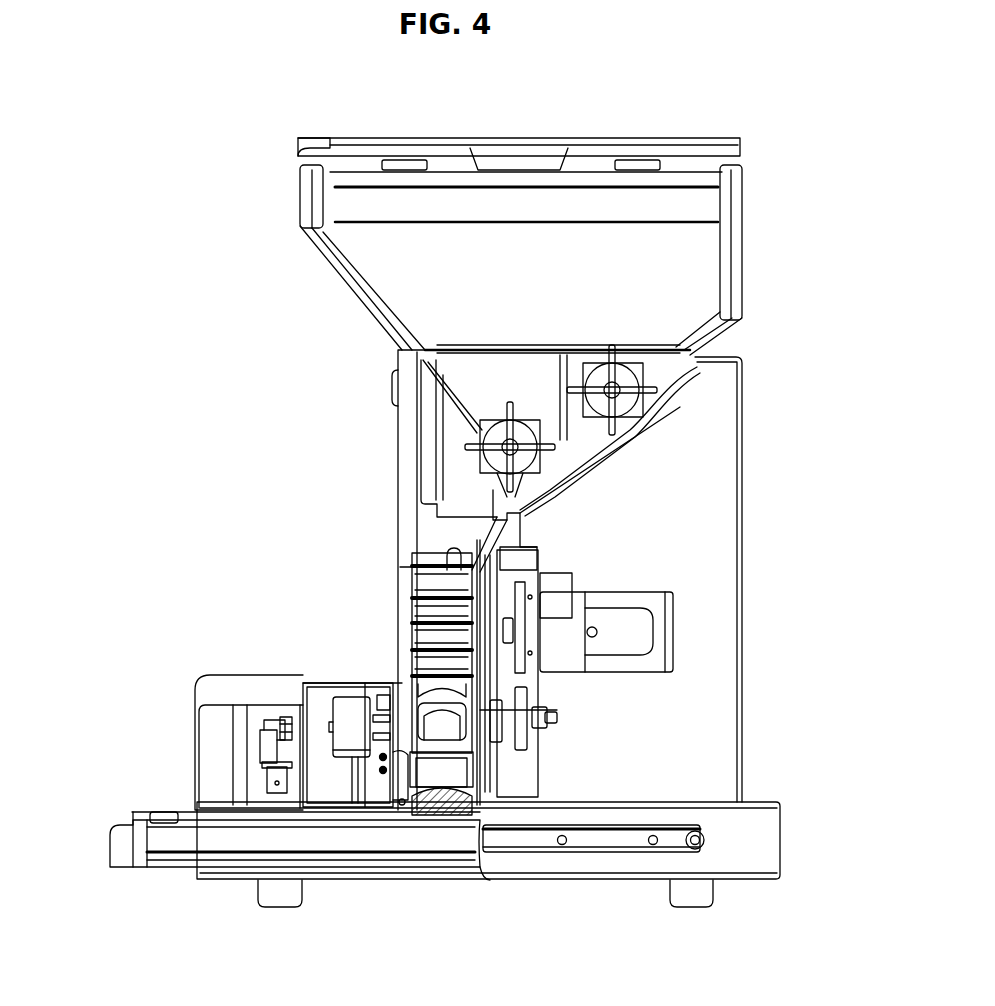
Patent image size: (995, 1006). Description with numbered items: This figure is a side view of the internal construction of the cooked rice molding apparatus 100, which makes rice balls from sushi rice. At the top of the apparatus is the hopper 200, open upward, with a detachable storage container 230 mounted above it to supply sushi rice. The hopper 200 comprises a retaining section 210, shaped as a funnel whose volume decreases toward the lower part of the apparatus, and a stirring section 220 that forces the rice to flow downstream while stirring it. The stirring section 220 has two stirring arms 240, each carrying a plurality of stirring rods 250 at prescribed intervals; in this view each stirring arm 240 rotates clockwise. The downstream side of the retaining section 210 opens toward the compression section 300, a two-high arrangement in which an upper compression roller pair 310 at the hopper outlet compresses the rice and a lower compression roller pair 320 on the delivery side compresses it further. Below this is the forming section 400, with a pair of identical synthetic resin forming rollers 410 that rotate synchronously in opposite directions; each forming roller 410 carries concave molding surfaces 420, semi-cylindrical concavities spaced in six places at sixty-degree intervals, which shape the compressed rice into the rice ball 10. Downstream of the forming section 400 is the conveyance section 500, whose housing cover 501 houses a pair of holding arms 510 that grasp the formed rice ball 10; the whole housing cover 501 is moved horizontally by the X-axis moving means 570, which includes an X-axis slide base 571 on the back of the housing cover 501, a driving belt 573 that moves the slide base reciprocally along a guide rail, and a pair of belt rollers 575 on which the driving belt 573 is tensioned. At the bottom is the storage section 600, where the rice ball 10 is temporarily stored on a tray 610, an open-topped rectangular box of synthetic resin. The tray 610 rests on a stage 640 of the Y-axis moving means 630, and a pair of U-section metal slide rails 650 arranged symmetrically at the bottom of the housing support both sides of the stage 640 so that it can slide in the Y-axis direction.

The rice ball 10 is at (440, 812).
The cooked rice molding apparatus 100 is at (250, 412).
The hopper 200 is at (368, 403).
The retaining section 210 is at (678, 405).
The stirring section 220 is at (455, 445).
The storage container 230 is at (298, 216).
The stirring arm 240 is at (650, 386).
The stirring rods 250 is at (575, 370).
The compression section 300 is at (367, 605).
The upper compression roller pair 310 is at (412, 585).
The lower compression roller pair 320 is at (412, 643).
The forming section 400 is at (395, 668).
The forming roller 410 is at (477, 707).
The concave molding surface 420 is at (447, 717).
The conveyance section 500 is at (348, 818).
The housing cover 501 is at (366, 810).
The holding arm 510 is at (477, 768).
The X-axis moving means 570 is at (182, 718).
The X-axis slide base 571 is at (262, 742).
The driving belt 573 is at (283, 732).
The belt rollers 575 is at (265, 783).
The storage section 600 is at (178, 888).
The tray 610 is at (128, 838).
The Y-axis moving means 630 is at (415, 908).
The stage 640 is at (485, 870).
The slide rails 650 is at (593, 840).